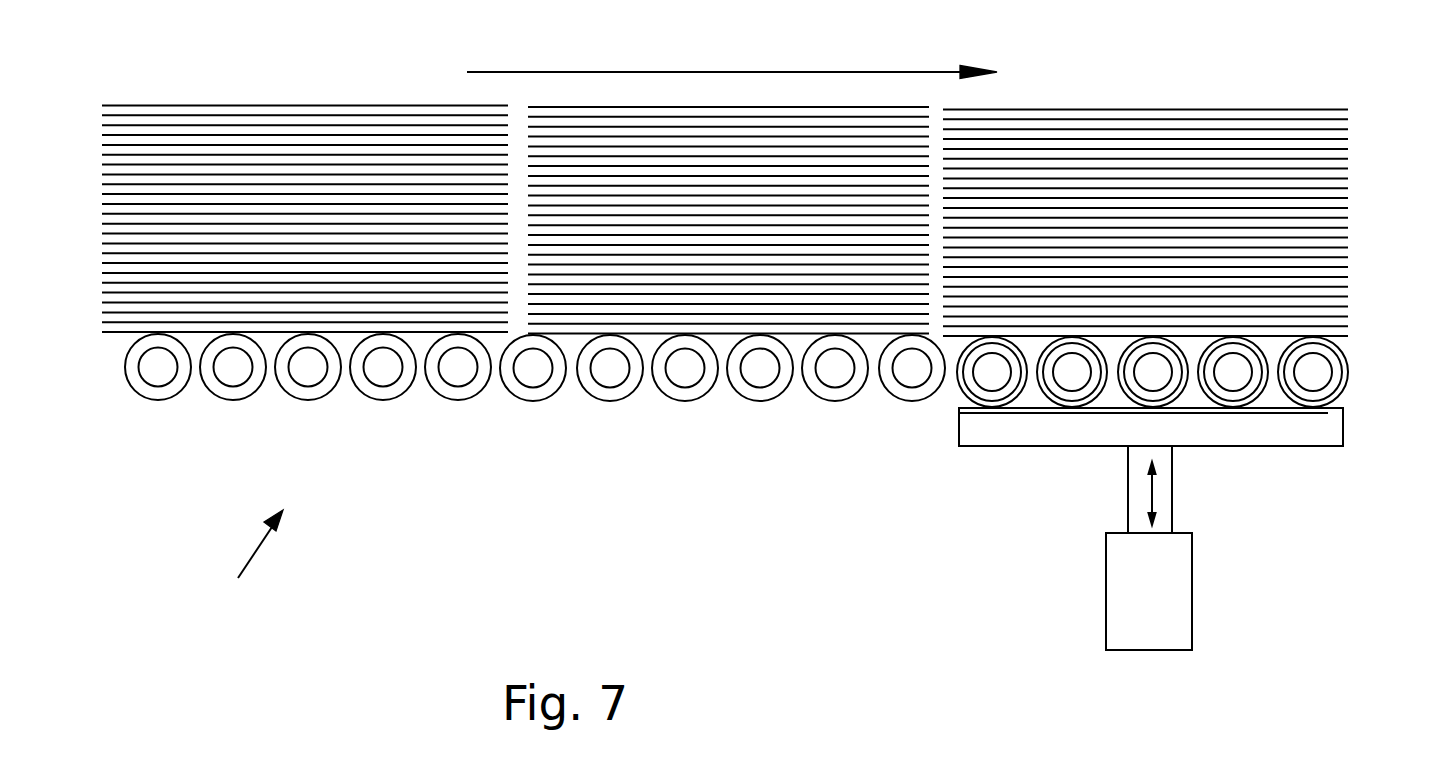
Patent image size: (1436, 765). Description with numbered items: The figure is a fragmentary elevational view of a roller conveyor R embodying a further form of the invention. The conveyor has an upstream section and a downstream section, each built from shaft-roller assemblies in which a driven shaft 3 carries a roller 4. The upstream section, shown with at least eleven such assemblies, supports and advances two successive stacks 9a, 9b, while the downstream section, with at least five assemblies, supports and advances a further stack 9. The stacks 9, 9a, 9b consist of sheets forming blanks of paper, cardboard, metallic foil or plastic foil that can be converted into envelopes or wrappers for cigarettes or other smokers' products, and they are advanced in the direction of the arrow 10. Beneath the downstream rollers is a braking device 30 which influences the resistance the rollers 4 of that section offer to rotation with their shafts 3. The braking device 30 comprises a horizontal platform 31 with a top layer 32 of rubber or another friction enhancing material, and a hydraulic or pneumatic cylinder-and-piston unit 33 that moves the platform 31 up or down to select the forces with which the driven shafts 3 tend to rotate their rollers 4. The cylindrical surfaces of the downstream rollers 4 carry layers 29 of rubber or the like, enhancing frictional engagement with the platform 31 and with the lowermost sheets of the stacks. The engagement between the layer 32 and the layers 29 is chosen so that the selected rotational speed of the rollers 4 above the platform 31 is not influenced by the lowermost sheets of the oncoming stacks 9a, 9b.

The shaft 3 is at (148, 368).
The roller 4 is at (150, 400).
The stack 9 is at (1175, 110).
The stack 9a is at (647, 108).
The stack 9b is at (217, 107).
The arrow 10 is at (732, 53).
The layer 29 is at (952, 390).
The braking device 30 is at (1171, 529).
The platform 31 is at (1268, 446).
The top layer 32 is at (1330, 413).
The cylinder-and-piston unit 33 is at (1022, 535).
The roller conveyor R is at (252, 567).